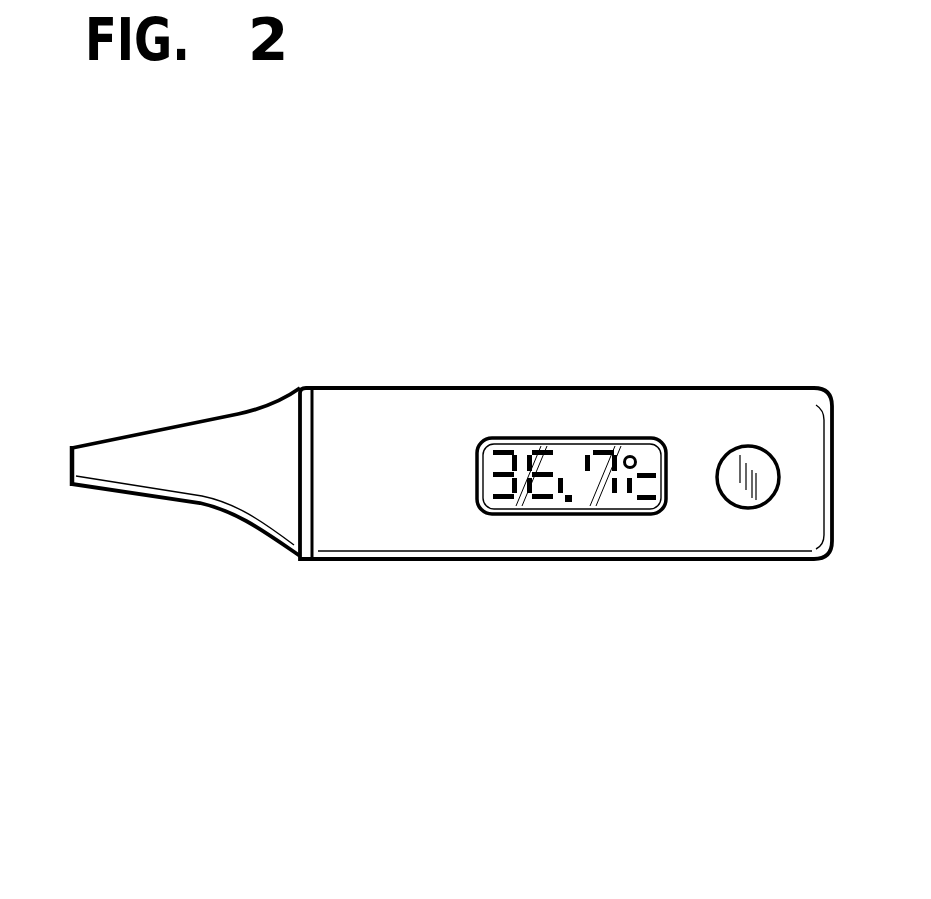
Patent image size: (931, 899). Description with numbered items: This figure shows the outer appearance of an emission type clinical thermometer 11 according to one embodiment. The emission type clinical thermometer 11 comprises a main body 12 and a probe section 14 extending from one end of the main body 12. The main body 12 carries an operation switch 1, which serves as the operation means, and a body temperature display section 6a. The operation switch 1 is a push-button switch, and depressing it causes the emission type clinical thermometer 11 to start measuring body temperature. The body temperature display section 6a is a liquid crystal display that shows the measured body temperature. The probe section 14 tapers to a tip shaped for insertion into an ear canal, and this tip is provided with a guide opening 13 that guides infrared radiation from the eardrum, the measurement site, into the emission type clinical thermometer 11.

The emission type clinical thermometer 11 is at (396, 388).
The main body 12 is at (632, 388).
The guide opening 13 is at (65, 463).
The probe section 14 is at (205, 480).
The body temperature display section 6a is at (562, 508).
The operation switch 1 is at (732, 488).